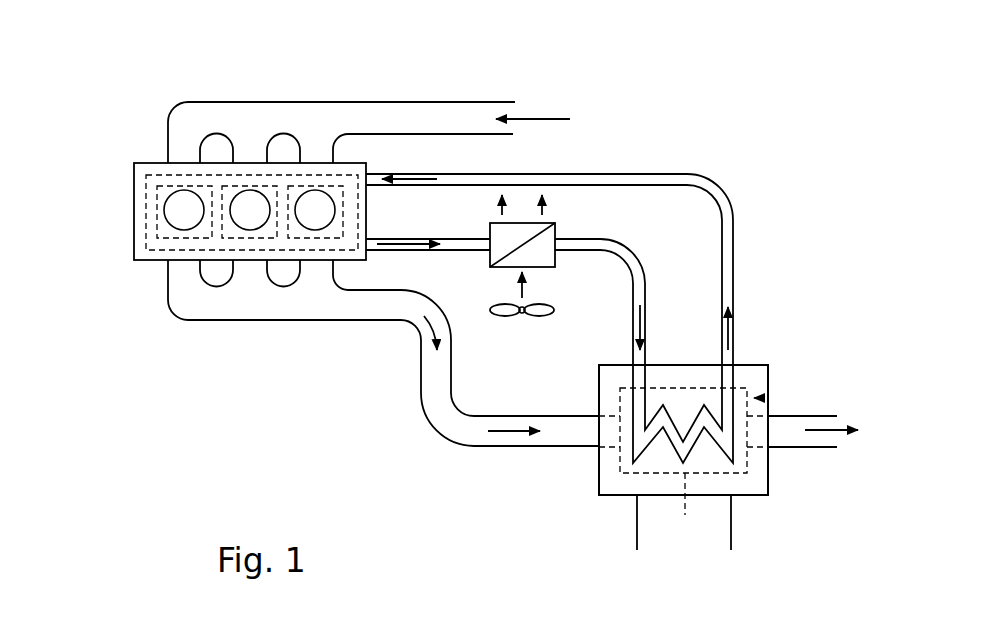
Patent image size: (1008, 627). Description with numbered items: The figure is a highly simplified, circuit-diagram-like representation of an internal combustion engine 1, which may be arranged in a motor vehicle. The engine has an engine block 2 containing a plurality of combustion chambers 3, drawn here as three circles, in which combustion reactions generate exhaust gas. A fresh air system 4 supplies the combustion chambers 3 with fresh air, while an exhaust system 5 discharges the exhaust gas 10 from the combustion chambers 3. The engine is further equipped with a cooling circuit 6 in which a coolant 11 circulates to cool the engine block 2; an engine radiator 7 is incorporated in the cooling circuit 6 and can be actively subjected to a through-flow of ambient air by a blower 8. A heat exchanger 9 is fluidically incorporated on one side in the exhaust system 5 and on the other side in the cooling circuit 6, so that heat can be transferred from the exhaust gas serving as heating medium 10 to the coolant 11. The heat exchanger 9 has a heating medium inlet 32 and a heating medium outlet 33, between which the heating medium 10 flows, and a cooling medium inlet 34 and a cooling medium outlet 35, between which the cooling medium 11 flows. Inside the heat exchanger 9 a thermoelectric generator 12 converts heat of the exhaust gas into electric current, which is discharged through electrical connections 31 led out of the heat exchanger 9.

The internal combustion engine 1 is at (749, 151).
The engine block 2 is at (133, 208).
The combustion chambers 3 is at (321, 223).
The fresh air system 4 is at (355, 99).
The exhaust system 5 is at (248, 324).
The cooling circuit 6 is at (736, 258).
The engine radiator 7 is at (557, 225).
The blower 8 is at (509, 315).
The heat exchanger 9 is at (595, 481).
The exhaust gas 10 is at (508, 435).
The coolant 11 is at (410, 180).
The thermoelectric generator 12 is at (685, 510).
The electrical connections 31 is at (637, 523).
The heating medium inlet 32 is at (599, 412).
The heating medium outlet 33 is at (769, 412).
The cooling medium inlet 34 is at (633, 365).
The cooling medium outlet 35 is at (735, 365).